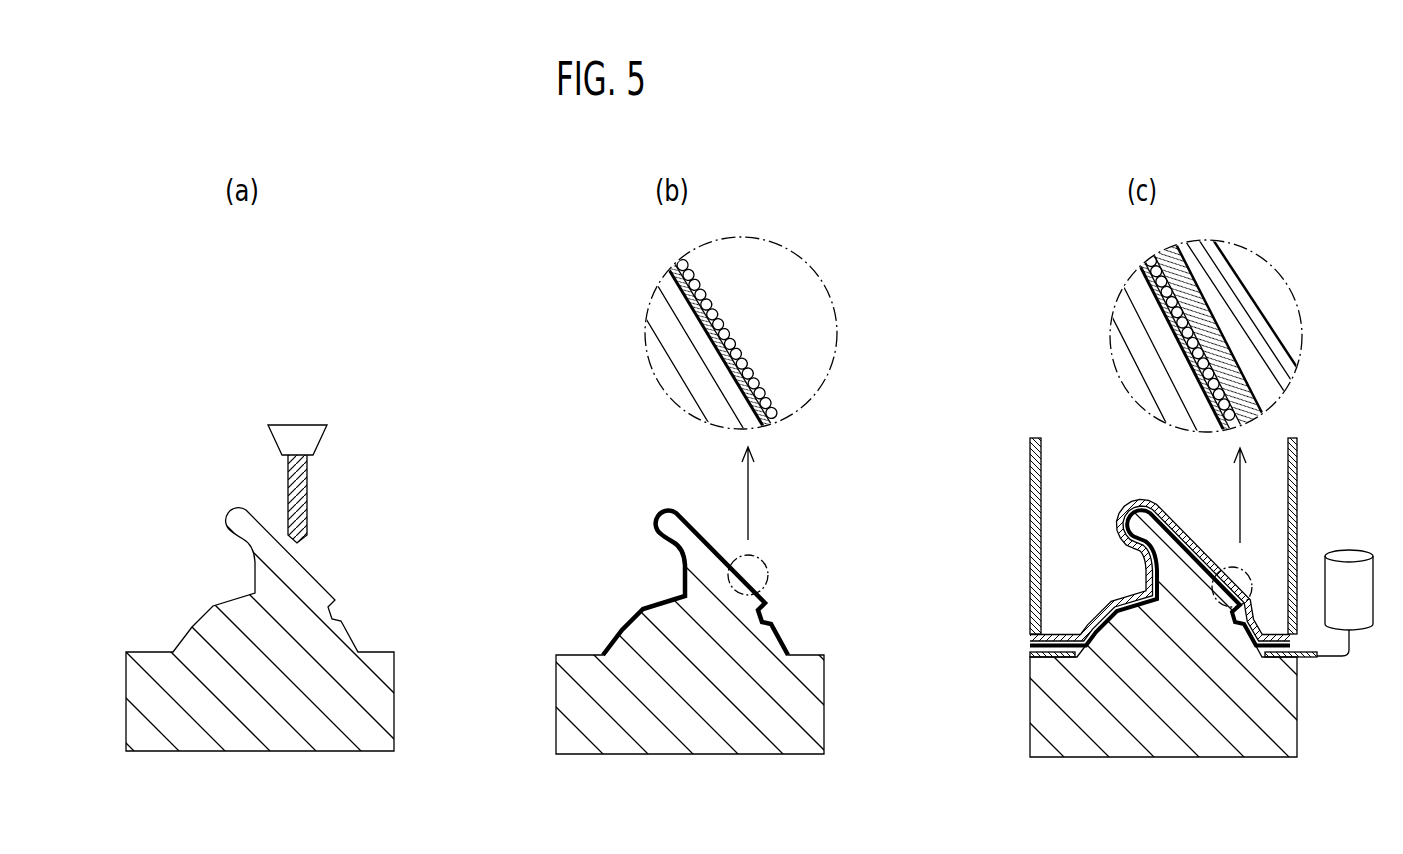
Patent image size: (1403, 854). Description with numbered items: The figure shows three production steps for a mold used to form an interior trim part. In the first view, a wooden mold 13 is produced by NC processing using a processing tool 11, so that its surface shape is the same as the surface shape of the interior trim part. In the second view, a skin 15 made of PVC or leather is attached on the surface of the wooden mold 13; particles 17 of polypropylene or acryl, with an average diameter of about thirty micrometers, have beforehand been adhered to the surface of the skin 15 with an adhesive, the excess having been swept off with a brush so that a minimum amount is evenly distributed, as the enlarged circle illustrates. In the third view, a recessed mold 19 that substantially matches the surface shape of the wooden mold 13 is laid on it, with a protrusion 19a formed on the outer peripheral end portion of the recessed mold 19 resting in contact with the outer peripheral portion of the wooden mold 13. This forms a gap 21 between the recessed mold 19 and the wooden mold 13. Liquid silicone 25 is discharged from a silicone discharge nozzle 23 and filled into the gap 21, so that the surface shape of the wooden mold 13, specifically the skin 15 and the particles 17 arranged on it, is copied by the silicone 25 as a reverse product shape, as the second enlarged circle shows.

The processing tool 11 is at (299, 426).
The wooden mold 13 is at (313, 567).
The skin 15 is at (762, 427).
The particles 17 is at (725, 338).
The recessed mold 19 is at (1030, 500).
The protrusion 19a is at (1030, 656).
The gap 21 is at (1133, 492).
The silicone discharge nozzle 23 is at (1312, 665).
The silicone 25 is at (1237, 392).